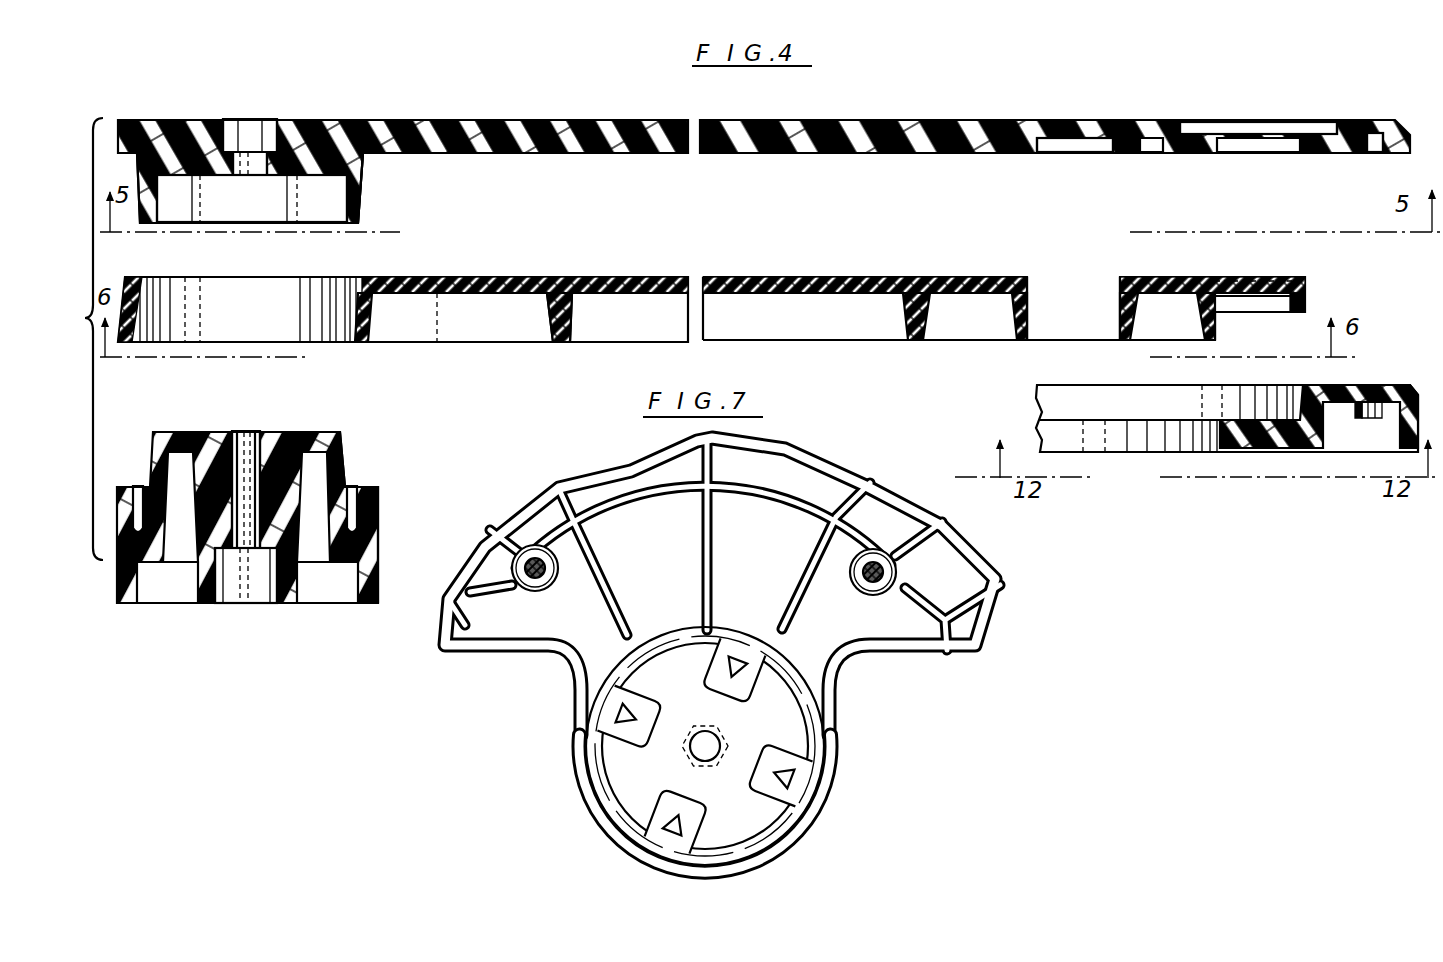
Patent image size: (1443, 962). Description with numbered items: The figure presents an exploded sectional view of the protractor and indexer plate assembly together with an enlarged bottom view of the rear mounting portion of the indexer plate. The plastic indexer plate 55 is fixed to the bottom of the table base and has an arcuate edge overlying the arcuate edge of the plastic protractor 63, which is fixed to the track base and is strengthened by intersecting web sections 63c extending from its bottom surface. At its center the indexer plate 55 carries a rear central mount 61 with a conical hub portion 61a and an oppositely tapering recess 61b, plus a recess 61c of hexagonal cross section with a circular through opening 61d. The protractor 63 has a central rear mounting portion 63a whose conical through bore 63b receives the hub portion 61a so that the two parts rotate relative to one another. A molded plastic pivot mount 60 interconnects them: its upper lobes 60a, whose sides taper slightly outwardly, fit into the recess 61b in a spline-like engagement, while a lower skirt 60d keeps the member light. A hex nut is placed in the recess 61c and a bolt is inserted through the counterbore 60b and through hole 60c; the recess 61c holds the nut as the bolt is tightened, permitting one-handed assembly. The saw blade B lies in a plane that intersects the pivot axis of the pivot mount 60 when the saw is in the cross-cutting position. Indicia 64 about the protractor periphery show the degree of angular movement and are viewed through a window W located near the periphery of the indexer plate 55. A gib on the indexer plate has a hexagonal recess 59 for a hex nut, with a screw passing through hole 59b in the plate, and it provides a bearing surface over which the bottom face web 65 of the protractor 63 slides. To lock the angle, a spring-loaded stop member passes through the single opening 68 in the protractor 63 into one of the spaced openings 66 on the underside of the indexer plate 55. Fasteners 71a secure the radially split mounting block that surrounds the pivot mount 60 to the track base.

In FIG. 4, the indexer plate 55 is at (558, 122).
In FIG. 7, the indexer plate 55 is at (977, 568).
In FIG. 4, the window W is at (1282, 128).
In FIG. 4, the recess 59 is at (1366, 428).
In FIG. 4, the hole 59b is at (1375, 151).
In FIG. 4, the pivot mount 60 is at (156, 612).
In FIG. 4, the upper lobes 60a is at (345, 462).
In FIG. 4, the counterbore 60b is at (262, 600).
In FIG. 4, the through hole 60c is at (249, 448).
In FIG. 4, the lower skirt 60d is at (378, 550).
In FIG. 4, the rear central mount 61 is at (156, 114).
In FIG. 7, the rear central mount 61 is at (850, 750).
In FIG. 4, the hub portion 61a is at (362, 195).
In FIG. 4, the recess 61b is at (263, 210).
In FIG. 7, the recess 61b is at (628, 780).
In FIG. 4, the recess 61c is at (254, 135).
In FIG. 4, the circular through opening 61d is at (242, 167).
In FIG. 4, the protractor 63 is at (628, 278).
In FIG. 4, the central rear mounting portion 63a is at (372, 320).
In FIG. 4, the conical through bore 63b is at (152, 296).
In FIG. 4, the web sections 63c is at (548, 346).
In FIG. 4, the indicia 64 is at (1262, 283).
In FIG. 4, the bottom face web 65 is at (1298, 317).
In FIG. 4, the spaced openings 66 is at (1088, 148).
In FIG. 4, the opening 68 is at (1072, 292).
In FIG. 7, the fasteners 71a is at (880, 566).
In FIG. 7, the saw blade B is at (718, 735).